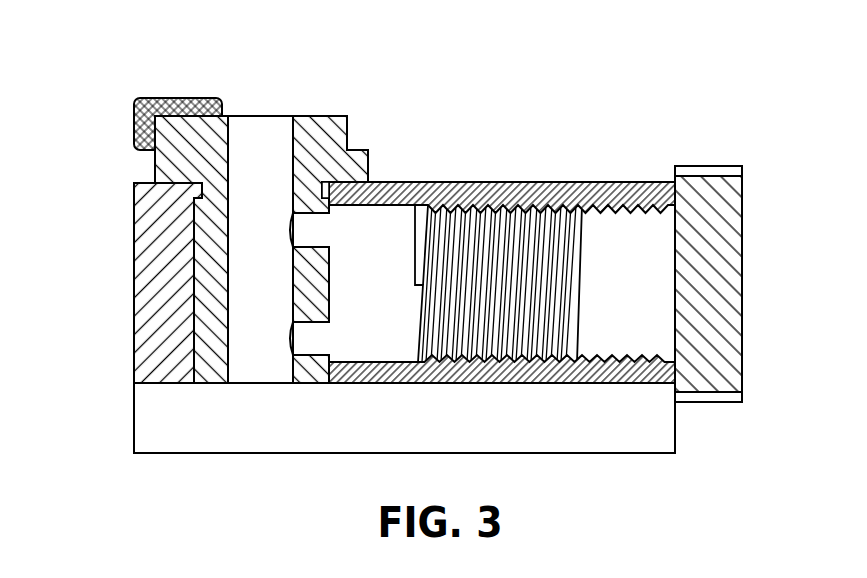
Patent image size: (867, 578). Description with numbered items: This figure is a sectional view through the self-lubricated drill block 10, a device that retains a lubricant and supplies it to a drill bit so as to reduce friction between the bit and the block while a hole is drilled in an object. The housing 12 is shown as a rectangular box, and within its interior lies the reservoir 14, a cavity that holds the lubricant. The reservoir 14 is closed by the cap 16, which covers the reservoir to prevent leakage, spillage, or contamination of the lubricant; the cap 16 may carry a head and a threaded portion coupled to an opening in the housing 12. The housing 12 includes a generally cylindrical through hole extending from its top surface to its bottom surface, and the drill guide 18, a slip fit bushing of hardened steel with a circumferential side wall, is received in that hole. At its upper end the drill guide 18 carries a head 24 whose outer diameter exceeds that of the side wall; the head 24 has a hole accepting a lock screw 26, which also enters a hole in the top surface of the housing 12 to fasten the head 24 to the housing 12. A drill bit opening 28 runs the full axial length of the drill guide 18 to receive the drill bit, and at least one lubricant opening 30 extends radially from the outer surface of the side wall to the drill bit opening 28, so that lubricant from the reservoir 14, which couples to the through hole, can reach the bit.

The self-lubricated drill block 10 is at (537, 75).
The housing 12 is at (125, 268).
The reservoir 14 is at (368, 227).
The cap 16 is at (745, 203).
The drill guide 18 is at (293, 213).
The head 24 is at (323, 115).
The lock screw 26 is at (163, 97).
The drill bit opening 28 is at (253, 127).
The lubricant opening 30 is at (325, 233).